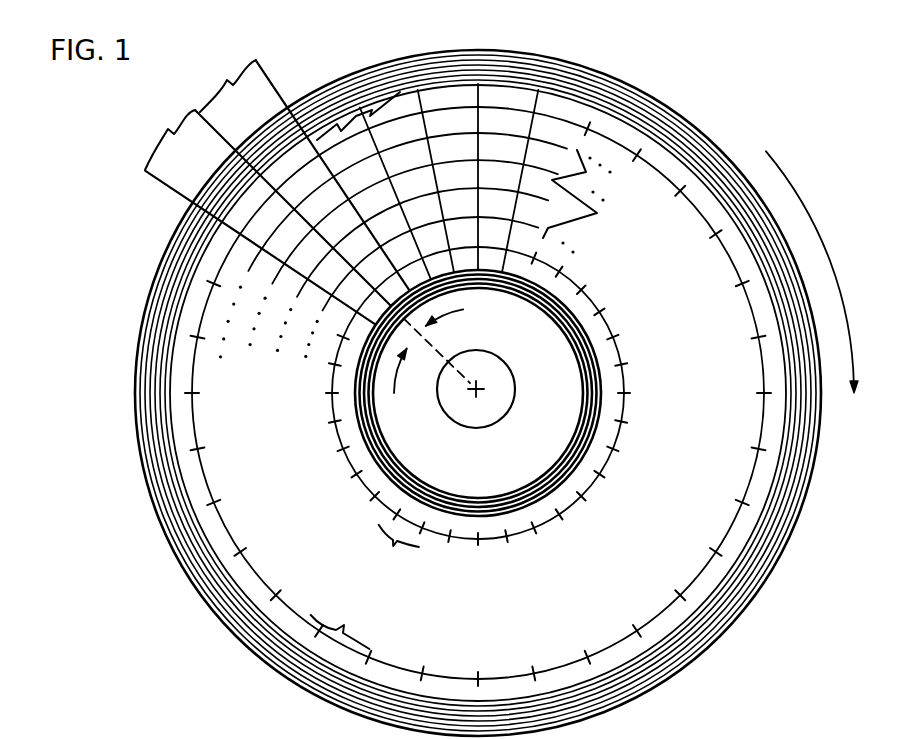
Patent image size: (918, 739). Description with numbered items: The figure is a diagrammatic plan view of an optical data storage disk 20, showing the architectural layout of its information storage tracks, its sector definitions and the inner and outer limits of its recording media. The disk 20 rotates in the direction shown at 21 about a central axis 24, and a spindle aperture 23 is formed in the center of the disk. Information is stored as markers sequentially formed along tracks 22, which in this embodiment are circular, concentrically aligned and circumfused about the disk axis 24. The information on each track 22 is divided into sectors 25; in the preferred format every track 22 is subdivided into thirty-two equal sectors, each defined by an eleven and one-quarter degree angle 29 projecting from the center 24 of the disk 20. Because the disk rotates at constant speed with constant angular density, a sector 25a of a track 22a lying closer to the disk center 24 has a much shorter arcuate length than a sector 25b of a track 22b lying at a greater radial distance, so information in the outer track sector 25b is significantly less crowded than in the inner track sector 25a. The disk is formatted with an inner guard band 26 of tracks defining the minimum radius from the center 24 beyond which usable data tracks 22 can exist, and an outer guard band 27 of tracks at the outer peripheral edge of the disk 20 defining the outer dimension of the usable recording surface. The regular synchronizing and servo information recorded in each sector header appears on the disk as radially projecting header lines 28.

The optical data storage disk 20 is at (735, 152).
The direction of rotation 21 is at (843, 296).
The tracks 22 is at (598, 212).
The track lying closer to the disk center 22a is at (466, 541).
The track at a greater radial distance 22b is at (450, 681).
The spindle aperture 23 is at (507, 365).
The central axis 24 is at (480, 390).
The sectors 25 is at (273, 190).
The inner track sector 25a is at (393, 557).
The outer track sector 25b is at (350, 622).
The inner guard band 26 is at (596, 355).
The outer guard band 27 is at (637, 100).
The radial header lines 28 is at (454, 100).
The sector angle 29 is at (445, 344).